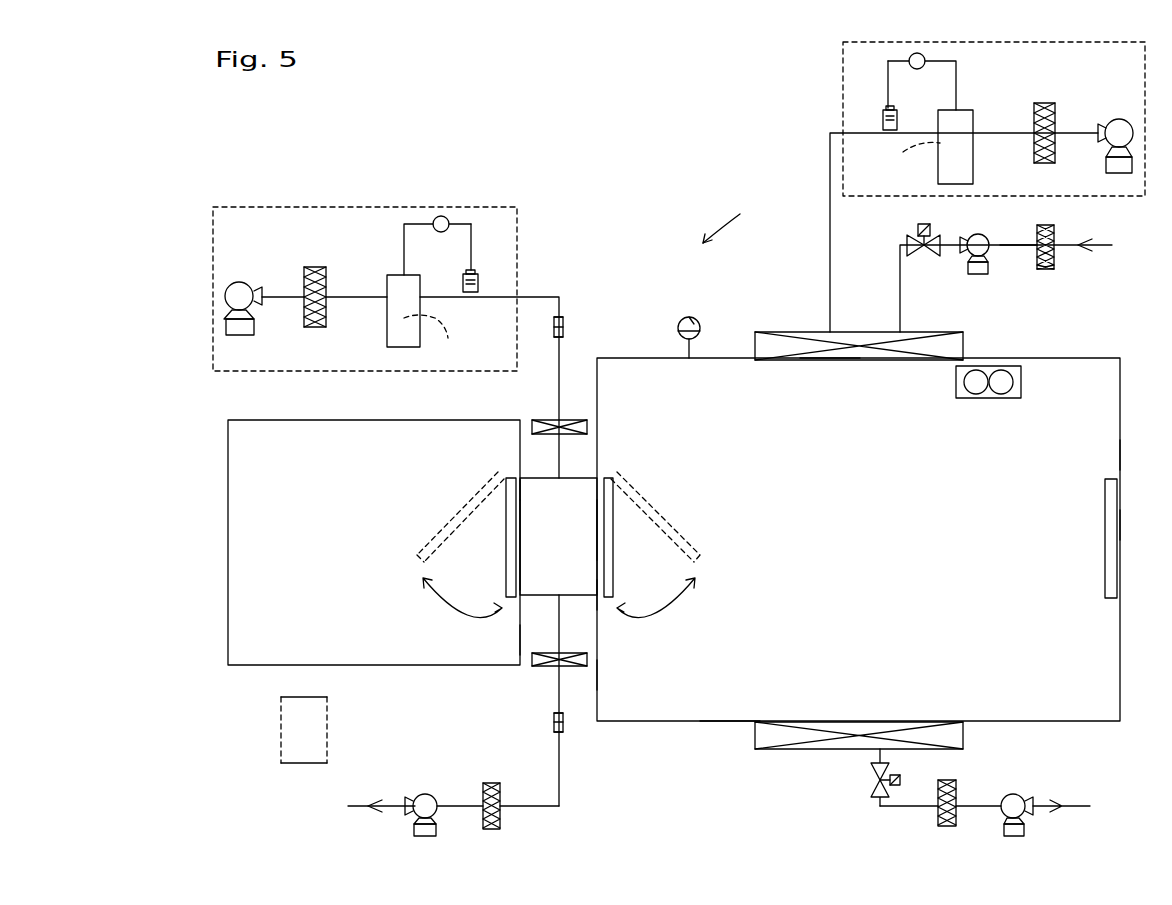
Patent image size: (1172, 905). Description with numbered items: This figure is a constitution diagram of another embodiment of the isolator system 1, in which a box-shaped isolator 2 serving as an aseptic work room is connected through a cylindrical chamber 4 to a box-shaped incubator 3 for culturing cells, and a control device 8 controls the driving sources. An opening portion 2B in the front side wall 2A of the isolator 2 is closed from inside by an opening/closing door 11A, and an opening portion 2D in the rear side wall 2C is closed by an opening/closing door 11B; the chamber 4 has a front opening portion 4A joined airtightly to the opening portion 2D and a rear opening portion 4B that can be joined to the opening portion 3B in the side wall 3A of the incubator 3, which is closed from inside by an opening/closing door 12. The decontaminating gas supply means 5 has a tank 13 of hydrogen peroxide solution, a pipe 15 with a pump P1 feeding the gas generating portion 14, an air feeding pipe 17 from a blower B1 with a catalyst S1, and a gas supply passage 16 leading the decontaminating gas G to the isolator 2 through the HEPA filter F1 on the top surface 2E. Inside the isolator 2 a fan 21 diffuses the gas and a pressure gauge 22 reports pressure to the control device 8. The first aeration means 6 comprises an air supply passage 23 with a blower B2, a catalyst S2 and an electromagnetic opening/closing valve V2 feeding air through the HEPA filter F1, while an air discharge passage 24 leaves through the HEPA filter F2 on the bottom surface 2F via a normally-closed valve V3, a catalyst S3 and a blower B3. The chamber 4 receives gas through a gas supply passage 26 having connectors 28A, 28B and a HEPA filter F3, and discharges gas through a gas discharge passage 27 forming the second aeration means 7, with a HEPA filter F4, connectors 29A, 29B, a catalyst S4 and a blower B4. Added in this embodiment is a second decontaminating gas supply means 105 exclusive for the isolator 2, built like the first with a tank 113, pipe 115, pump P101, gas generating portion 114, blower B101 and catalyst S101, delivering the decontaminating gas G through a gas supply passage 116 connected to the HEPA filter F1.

The isolator system 1 is at (760, 212).
The isolator 2 is at (888, 494).
The side wall 2A is at (1120, 458).
The opening portion 2B is at (1120, 524).
The side wall 2C is at (605, 675).
The opening portion 2D is at (600, 602).
The top surface 2E is at (824, 362).
The bottom surface 2F is at (740, 720).
The incubator 3 is at (381, 434).
The side wall 3A is at (520, 641).
The opening portion 3B is at (520, 492).
The chamber 4 is at (579, 473).
The opening portion 4A is at (597, 527).
The opening portion 4B is at (520, 556).
The decontaminating gas supply means 5 is at (381, 220).
The first aeration means 6 is at (1038, 238).
The second aeration means 7 is at (571, 804).
The control device 8 is at (320, 750).
The opening/closing door 11A is at (1105, 548).
The opening/closing door 11B is at (613, 568).
The opening/closing door 12 is at (506, 562).
The tank 13 is at (478, 281).
The gas generating portion 14 is at (392, 329).
The pipe 15 is at (404, 253).
The gas supply passage 16 is at (532, 297).
The air feeding pipe 17 is at (352, 297).
The fan 21 is at (997, 398).
The pressure gauge 22 is at (685, 318).
The air supply passage 23 is at (1012, 247).
The air discharge passage 24 is at (906, 808).
The gas supply passage 26 is at (563, 333).
The gas discharge passage 27 is at (559, 740).
The connector 28A is at (554, 321).
The connector 28B is at (554, 333).
The connector 29A is at (563, 717).
The connector 29B is at (563, 727).
The second decontaminating gas supply means 105 is at (833, 83).
The tank 113 is at (897, 121).
The gas generating portion 114 is at (958, 126).
The pipe 115 is at (958, 80).
The gas supply passage 116 is at (830, 275).
The blower B1 is at (240, 335).
The blower B2 is at (975, 270).
The blower B3 is at (1014, 803).
The blower B4 is at (432, 800).
The blower B101 is at (1119, 120).
The catalyst S1 is at (314, 327).
The catalyst S2 is at (1046, 269).
The catalyst S3 is at (941, 826).
The catalyst S4 is at (500, 792).
The catalyst S101 is at (1046, 103).
The HEPA filter F1 is at (856, 332).
The HEPA filter F2 is at (860, 735).
The HEPA filter F3 is at (570, 430).
The HEPA filter F4 is at (570, 662).
The pump P1 is at (446, 216).
The pump P101 is at (914, 68).
The electromagnetic opening/closing valve V2 is at (926, 256).
The electromagnetic opening/closing valve V3 is at (868, 790).
The decontaminating gas G is at (432, 339).